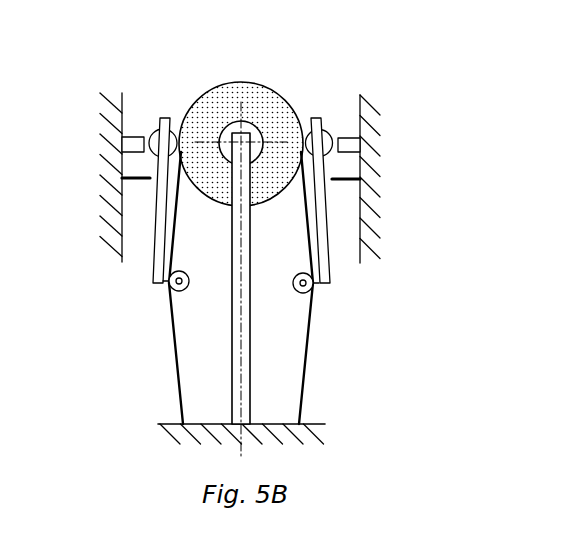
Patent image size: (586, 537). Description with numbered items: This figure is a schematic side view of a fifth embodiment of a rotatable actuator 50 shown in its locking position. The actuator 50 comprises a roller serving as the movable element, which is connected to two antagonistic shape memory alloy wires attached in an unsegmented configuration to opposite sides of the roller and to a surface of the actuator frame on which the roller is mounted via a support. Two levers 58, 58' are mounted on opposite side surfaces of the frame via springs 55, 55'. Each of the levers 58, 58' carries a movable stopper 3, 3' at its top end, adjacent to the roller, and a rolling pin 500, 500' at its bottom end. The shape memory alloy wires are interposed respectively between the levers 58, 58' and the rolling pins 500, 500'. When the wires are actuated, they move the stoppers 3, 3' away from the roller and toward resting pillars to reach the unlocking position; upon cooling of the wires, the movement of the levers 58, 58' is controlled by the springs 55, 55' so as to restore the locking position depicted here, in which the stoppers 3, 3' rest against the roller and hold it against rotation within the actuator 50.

The actuator 50 is at (433, 165).
The movable stopper 3 is at (136, 100).
The movable stopper 3' is at (367, 83).
The spring 55 is at (89, 173).
The spring 55' is at (398, 178).
The lever 58 is at (130, 213).
The lever 58' is at (397, 238).
The rolling pin 500 is at (156, 314).
The rolling pin 500' is at (361, 338).